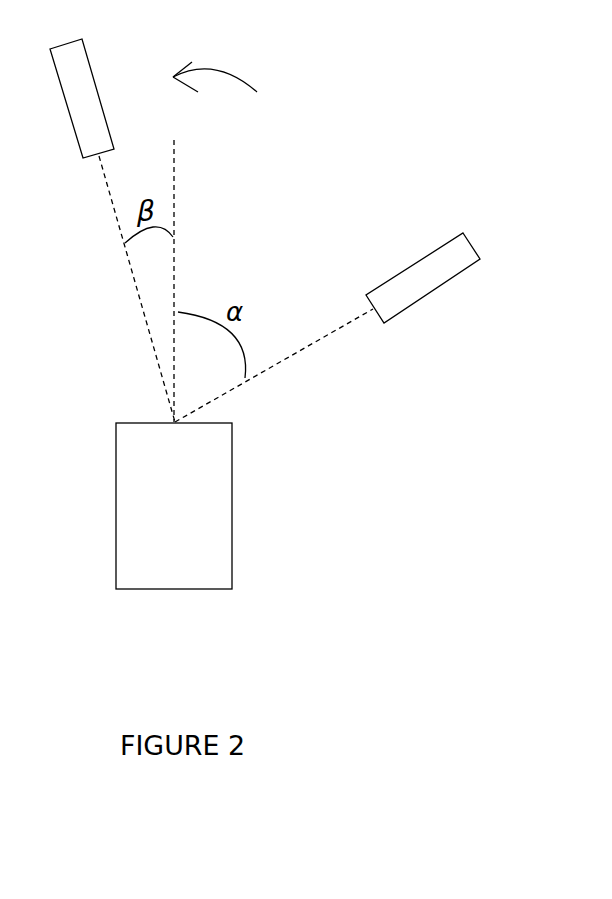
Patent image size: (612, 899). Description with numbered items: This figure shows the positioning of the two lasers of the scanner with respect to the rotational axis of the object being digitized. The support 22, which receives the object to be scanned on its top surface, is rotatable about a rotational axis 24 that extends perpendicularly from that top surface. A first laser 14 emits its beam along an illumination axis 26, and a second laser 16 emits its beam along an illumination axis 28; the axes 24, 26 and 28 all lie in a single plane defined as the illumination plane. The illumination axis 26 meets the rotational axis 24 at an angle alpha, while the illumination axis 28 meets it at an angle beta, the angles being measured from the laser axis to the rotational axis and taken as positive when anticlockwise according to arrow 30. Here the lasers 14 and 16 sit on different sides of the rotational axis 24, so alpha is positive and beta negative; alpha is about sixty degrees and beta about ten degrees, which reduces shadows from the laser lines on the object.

The first laser 14 is at (447, 258).
The second laser 16 is at (83, 77).
The support 22 is at (215, 507).
The rotational axis 24 is at (180, 192).
The illumination axis 26 is at (297, 355).
The illumination axis 28 is at (133, 292).
The arrow 30 is at (233, 70).